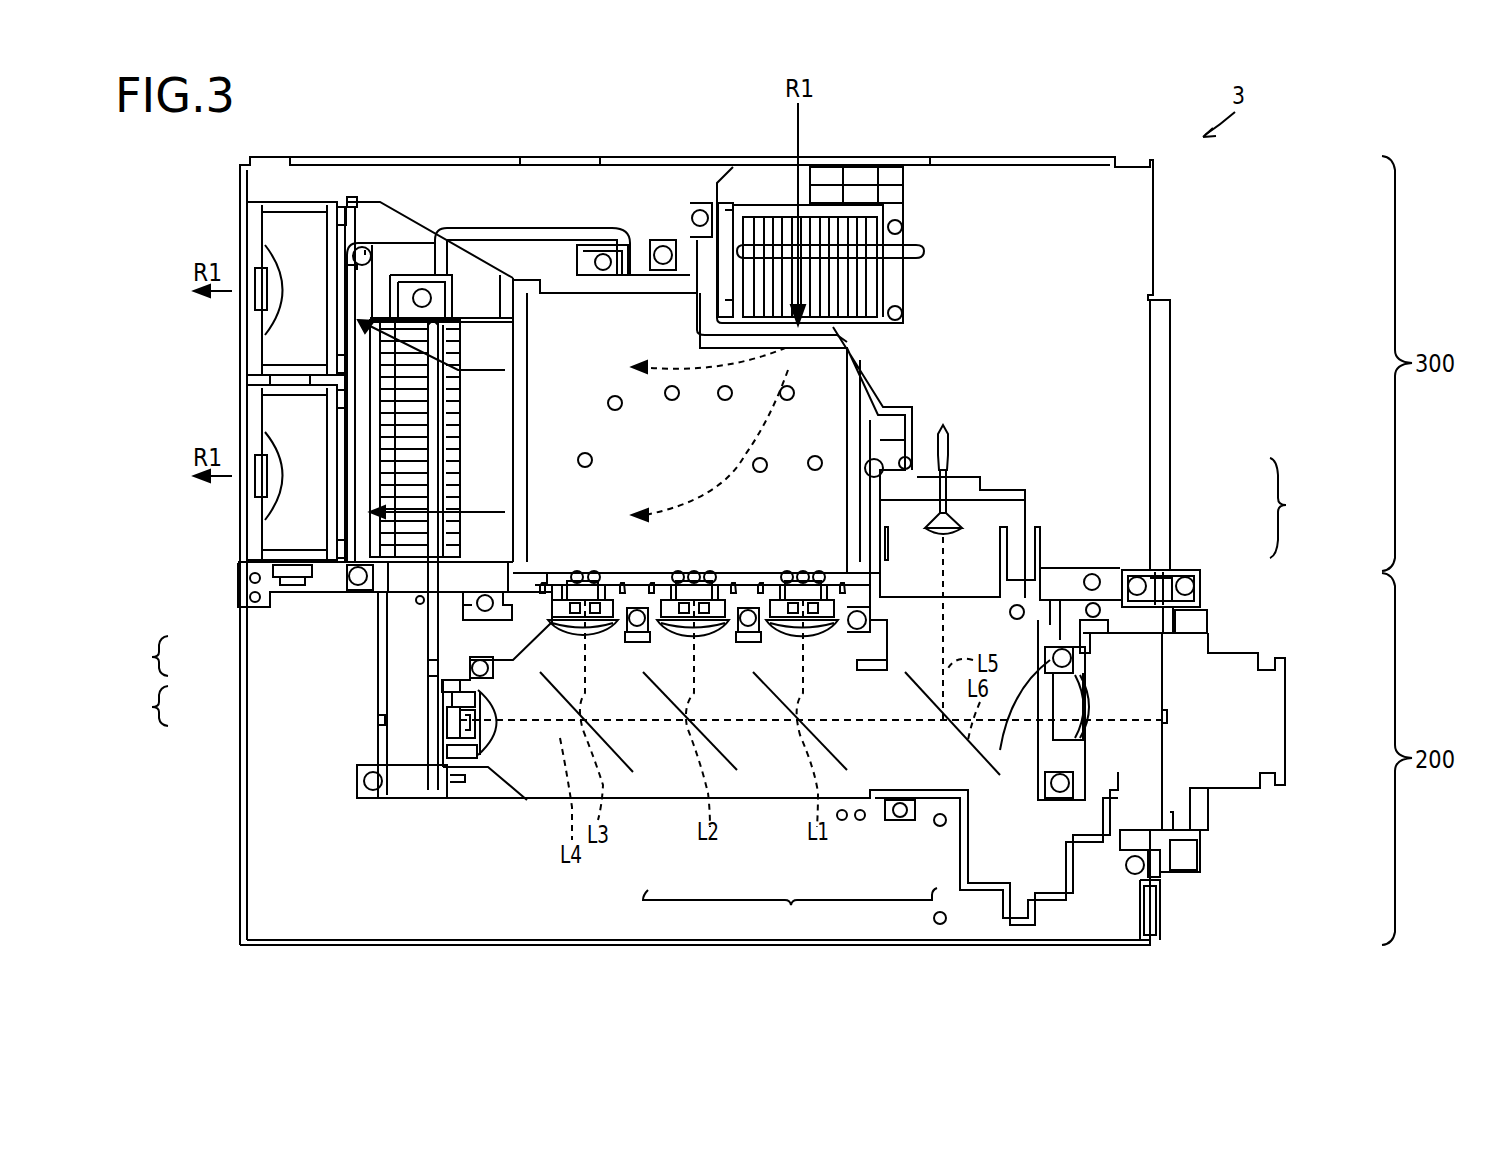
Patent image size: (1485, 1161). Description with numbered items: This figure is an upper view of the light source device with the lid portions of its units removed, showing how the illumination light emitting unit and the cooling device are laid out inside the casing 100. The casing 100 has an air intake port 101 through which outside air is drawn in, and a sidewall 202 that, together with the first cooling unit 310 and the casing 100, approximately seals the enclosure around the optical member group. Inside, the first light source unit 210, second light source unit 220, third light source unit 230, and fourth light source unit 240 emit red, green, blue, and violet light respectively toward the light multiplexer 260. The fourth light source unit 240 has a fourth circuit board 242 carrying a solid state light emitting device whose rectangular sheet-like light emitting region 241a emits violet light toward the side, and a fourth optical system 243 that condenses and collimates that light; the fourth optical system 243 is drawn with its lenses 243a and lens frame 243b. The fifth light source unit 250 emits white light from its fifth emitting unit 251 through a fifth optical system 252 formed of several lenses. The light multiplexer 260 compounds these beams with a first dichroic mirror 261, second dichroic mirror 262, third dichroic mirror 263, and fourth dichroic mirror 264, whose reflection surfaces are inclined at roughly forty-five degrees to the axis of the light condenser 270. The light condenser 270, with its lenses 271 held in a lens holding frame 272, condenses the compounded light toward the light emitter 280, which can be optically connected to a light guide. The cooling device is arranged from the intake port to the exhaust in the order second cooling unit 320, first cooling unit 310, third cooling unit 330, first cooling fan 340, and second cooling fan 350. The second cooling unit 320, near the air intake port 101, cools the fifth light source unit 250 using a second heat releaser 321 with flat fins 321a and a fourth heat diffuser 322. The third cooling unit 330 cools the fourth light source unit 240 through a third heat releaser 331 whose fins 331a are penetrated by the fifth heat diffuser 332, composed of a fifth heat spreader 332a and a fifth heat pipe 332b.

The casing 100 is at (1132, 158).
The air intake port 101 is at (843, 157).
The sidewall 202 is at (472, 800).
The first light source unit 210 is at (822, 691).
The second light source unit 220 is at (713, 691).
The third light source unit 230 is at (605, 692).
The fourth light source unit 240 is at (528, 740).
The sheet-like light emitting region 241a is at (563, 738).
The fourth circuit board 242 is at (454, 800).
The fourth optical system 243 is at (292, 660).
The light modulation element 243a is at (466, 684).
The holding frame 243b is at (433, 668).
The fifth light source unit 250 is at (1107, 522).
The fifth emitting unit 251 is at (950, 468).
The fifth optical system 252 is at (955, 527).
The light multiplexer 260 is at (756, 750).
The first dichroic mirror 261 is at (633, 772).
The second dichroic mirror 262 is at (737, 770).
The third dichroic mirror 263 is at (847, 770).
The fourth dichroic mirror 264 is at (917, 680).
The light condenser 270 is at (1103, 615).
The lenses 271 is at (1030, 653).
The lens holding frame 272 is at (1095, 780).
The light emitter 280 is at (1290, 715).
The first cooling unit 310 is at (643, 318).
The second cooling unit 320 is at (905, 215).
The second heat releaser 321 is at (748, 233).
The fins 321a is at (778, 226).
The fourth heat diffuser 322 is at (926, 247).
The third cooling unit 330 is at (487, 335).
The third heat releaser 331 is at (465, 348).
The fins 331a is at (465, 416).
The fifth heat diffuser 332 is at (307, 721).
The fifth heat spreader 332a is at (443, 777).
The fifth heat pipe 332b is at (430, 668).
The first cooling fan 340 is at (303, 202).
The second cooling fan 350 is at (285, 521).